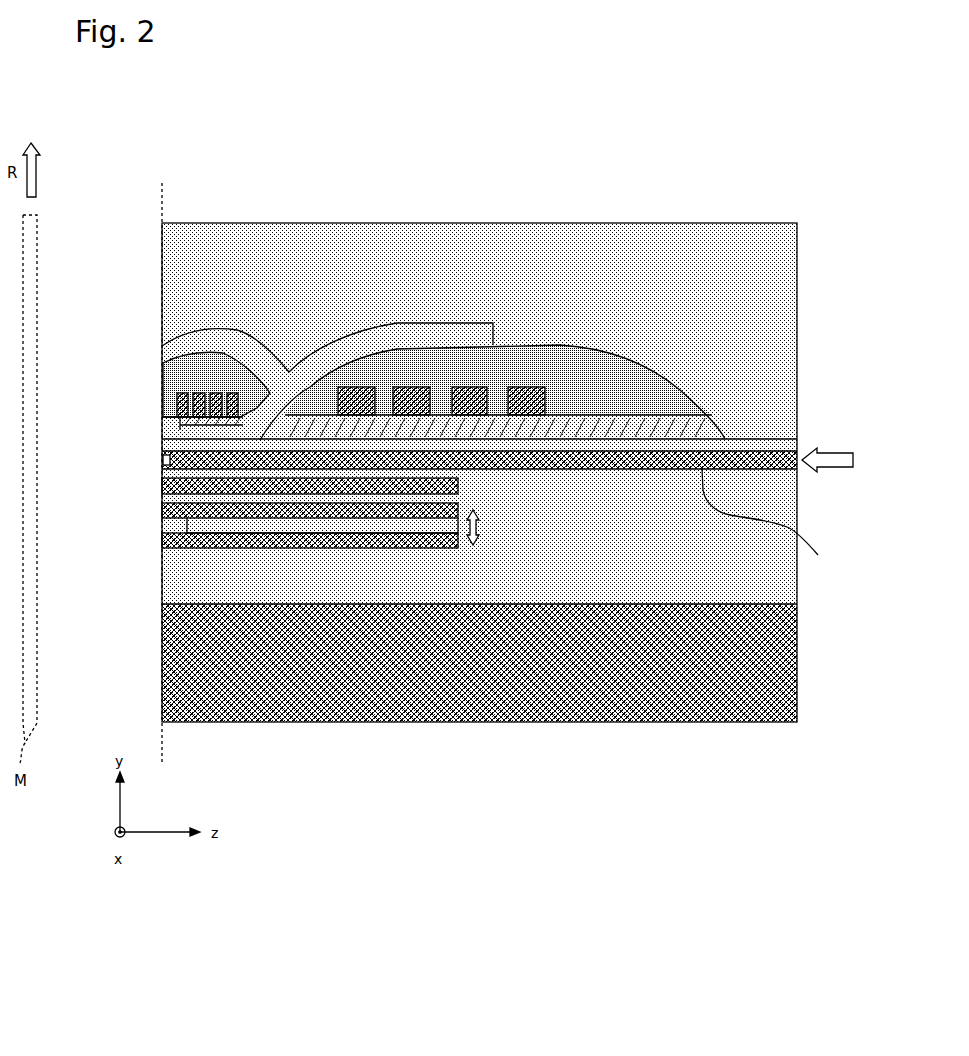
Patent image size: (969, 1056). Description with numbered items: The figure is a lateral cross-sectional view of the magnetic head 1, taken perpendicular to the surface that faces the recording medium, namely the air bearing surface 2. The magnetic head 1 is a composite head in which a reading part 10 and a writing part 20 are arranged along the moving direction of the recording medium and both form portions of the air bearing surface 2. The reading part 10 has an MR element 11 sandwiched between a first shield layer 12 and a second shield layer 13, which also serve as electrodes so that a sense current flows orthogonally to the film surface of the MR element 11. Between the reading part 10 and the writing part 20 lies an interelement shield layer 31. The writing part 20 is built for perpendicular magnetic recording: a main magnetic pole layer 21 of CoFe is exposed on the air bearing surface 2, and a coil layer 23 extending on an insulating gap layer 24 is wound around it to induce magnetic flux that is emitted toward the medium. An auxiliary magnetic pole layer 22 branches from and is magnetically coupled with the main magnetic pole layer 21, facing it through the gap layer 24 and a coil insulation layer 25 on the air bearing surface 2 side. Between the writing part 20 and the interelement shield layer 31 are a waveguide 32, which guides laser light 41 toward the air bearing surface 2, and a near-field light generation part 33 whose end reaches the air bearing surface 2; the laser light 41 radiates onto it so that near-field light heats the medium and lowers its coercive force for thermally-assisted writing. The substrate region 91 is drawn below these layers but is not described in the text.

The magnetic head 1 is at (421, 206).
The air bearing surface 2 is at (158, 462).
The reading part 10 is at (275, 536).
The MR element 11 is at (162, 525).
The first shield layer 12 is at (162, 541).
The second shield layer 13 is at (162, 510).
The writing part 20 is at (390, 315).
The main magnetic pole layer 21 is at (406, 428).
The auxiliary magnetic pole layer 22 is at (162, 353).
The coil layer 23 is at (162, 397).
The gap layer 24 is at (162, 421).
The coil insulation layer 25 is at (162, 372).
The interelement shield layer 31 is at (162, 486).
The waveguide 32 is at (772, 523).
The near-field light generation part 33 is at (162, 460).
The laser light 41 is at (837, 456).
The substrate 91 is at (162, 653).